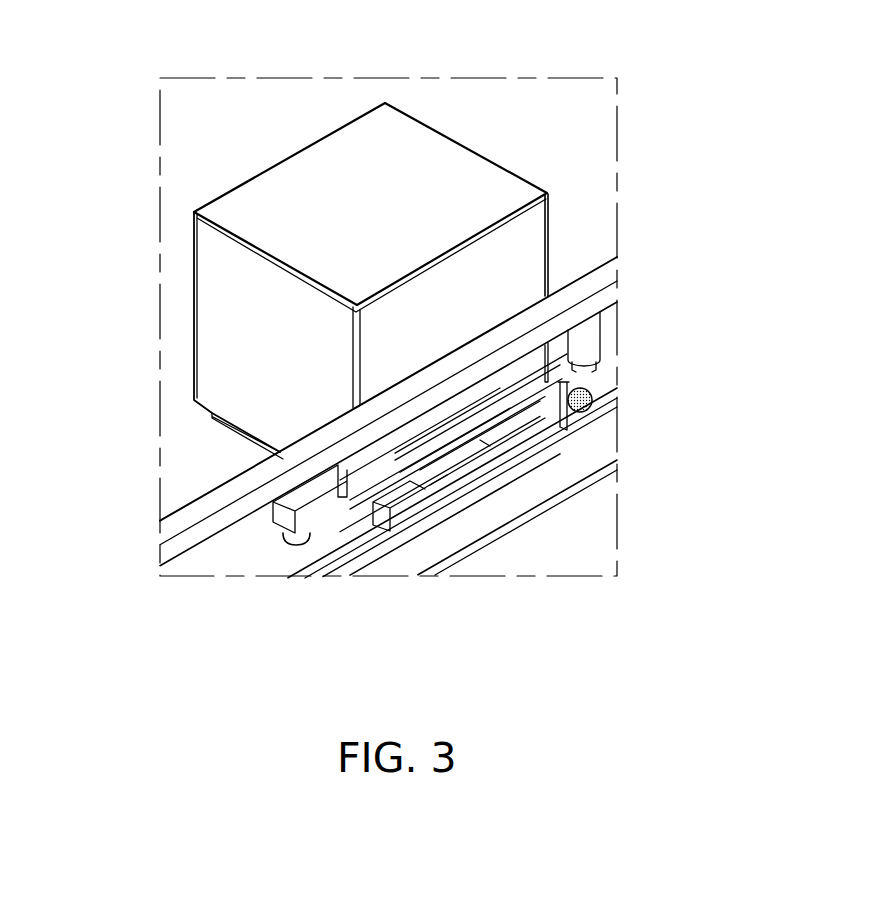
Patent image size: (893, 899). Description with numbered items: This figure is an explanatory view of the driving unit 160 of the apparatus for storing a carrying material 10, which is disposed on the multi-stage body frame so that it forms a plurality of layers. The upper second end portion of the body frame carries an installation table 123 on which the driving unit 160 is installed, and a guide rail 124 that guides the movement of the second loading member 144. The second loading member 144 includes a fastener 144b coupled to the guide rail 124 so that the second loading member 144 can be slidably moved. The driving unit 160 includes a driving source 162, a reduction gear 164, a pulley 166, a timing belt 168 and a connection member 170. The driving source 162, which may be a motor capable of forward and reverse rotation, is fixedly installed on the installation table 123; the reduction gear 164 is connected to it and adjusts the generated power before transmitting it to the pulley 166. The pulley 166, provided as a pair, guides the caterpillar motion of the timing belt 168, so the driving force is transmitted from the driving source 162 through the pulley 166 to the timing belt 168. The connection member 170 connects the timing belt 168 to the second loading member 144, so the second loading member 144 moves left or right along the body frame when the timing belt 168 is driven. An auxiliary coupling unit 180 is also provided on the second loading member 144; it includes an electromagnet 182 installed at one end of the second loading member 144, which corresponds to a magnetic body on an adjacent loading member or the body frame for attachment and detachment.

The carrying material 10 is at (293, 183).
The installation table 123 is at (603, 278).
The guide rail 124 is at (602, 403).
The second loading member 144 is at (212, 416).
The fastener 144b is at (486, 448).
The driving unit 160 is at (450, 504).
The driving source 162 is at (348, 463).
The reduction gear 164 is at (312, 510).
The pulley 166 is at (520, 387).
The timing belt 168 is at (450, 452).
The connection member 170 is at (548, 345).
The auxiliary coupling unit 180 is at (653, 398).
The electromagnet 182 is at (593, 383).